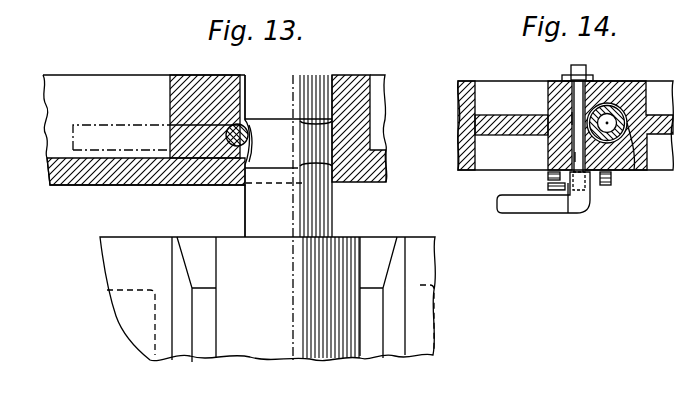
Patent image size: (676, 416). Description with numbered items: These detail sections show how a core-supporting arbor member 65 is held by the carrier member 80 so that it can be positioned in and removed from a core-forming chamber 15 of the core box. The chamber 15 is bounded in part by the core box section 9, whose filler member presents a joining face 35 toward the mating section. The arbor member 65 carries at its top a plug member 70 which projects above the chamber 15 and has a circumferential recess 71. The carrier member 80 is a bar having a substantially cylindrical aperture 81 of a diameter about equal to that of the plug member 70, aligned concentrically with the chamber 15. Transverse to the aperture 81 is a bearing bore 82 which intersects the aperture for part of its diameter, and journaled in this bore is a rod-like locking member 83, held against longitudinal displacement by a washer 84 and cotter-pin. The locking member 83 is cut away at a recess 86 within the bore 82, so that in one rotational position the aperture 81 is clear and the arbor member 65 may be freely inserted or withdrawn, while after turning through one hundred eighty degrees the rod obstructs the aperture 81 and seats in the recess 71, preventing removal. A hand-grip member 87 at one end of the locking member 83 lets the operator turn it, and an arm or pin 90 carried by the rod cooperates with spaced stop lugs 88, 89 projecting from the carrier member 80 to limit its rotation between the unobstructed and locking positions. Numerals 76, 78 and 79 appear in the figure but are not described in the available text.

In FIG. 13, the core box section 9 is at (437, 260).
In FIG. 13, the core-forming chamber 15 is at (372, 343).
In FIG. 13, the joining face 35 is at (397, 352).
In FIG. 13, the core-supporting arbor member 65 is at (253, 343).
In FIG. 13, the plug member 70 is at (250, 219).
In FIG. 14, the plug member 70 is at (629, 82).
In FIG. 13, the circumferential recess 71 is at (245, 185).
In FIG. 14, the circumferential recess 71 is at (604, 103).
In FIG. 14, the arm 76 is at (675, 377).
In FIG. 14, the lever 78 is at (675, 391).
In FIG. 14, the link 79 is at (675, 237).
In FIG. 13, the carrier member 80 is at (371, 77).
In FIG. 14, the carrier member 80 is at (507, 81).
In FIG. 13, the aperture 81 is at (245, 80).
In FIG. 14, the aperture 81 is at (627, 125).
In FIG. 13, the bearing bore 82 is at (230, 130).
In FIG. 14, the bearing bore 82 is at (566, 81).
In FIG. 13, the locking member 83 is at (250, 137).
In FIG. 14, the locking member 83 is at (578, 157).
In FIG. 14, the washer 84 is at (588, 79).
In FIG. 13, the recess 86 is at (246, 118).
In FIG. 14, the recess 86 is at (572, 117).
In FIG. 14, the hand-grip member 87 is at (521, 206).
In FIG. 14, the stop lug 88 is at (548, 179).
In FIG. 14, the stop lug 89 is at (612, 184).
In FIG. 14, the arm or pin 90 is at (566, 196).